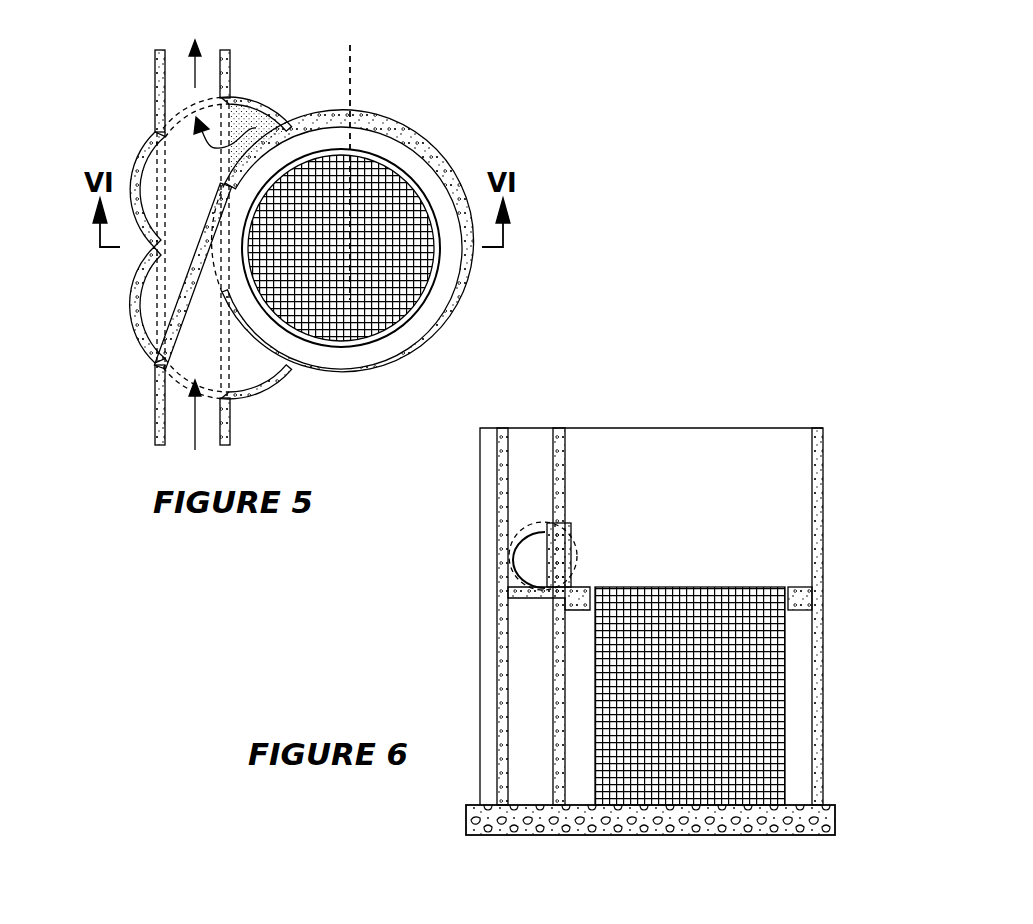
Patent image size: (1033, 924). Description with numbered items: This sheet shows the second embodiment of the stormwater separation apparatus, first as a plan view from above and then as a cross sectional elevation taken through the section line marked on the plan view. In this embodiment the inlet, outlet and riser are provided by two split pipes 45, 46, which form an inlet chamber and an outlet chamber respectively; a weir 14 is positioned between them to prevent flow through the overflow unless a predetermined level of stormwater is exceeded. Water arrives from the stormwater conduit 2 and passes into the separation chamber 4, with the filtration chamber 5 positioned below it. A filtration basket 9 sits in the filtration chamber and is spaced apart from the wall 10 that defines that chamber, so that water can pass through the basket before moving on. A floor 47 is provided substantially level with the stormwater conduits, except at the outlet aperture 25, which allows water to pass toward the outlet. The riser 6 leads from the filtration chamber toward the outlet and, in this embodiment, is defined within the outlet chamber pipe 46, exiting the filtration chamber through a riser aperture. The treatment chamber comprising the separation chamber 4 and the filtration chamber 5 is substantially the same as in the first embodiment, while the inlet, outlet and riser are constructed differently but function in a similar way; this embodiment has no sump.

In FIG. 6, the stormwater conduit 2 is at (520, 552).
In FIG. 6, the separation chamber 4 is at (708, 548).
In FIG. 6, the filtration chamber 5 is at (787, 723).
In FIG. 6, the riser 6 is at (522, 697).
In FIG. 5, the filtration basket 9 is at (333, 205).
In FIG. 5, the wall 10 is at (463, 292).
In FIG. 5, the weir 14 is at (187, 288).
In FIG. 5, the outlet aperture 25 is at (257, 97).
In FIG. 5, the split pipe 45 is at (132, 328).
In FIG. 5, the outlet chamber pipe 46 is at (147, 137).
In FIG. 6, the floor 47 is at (510, 575).